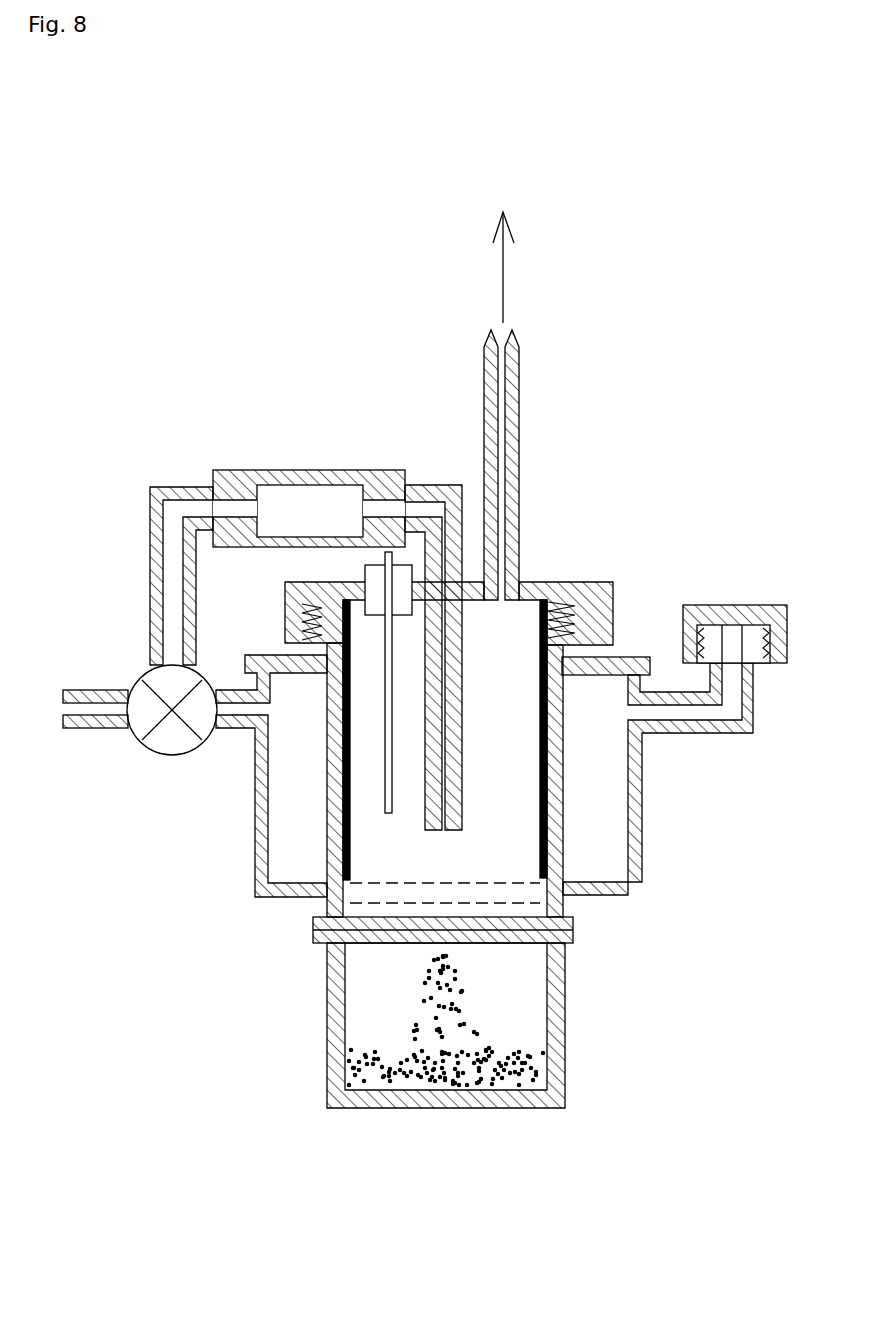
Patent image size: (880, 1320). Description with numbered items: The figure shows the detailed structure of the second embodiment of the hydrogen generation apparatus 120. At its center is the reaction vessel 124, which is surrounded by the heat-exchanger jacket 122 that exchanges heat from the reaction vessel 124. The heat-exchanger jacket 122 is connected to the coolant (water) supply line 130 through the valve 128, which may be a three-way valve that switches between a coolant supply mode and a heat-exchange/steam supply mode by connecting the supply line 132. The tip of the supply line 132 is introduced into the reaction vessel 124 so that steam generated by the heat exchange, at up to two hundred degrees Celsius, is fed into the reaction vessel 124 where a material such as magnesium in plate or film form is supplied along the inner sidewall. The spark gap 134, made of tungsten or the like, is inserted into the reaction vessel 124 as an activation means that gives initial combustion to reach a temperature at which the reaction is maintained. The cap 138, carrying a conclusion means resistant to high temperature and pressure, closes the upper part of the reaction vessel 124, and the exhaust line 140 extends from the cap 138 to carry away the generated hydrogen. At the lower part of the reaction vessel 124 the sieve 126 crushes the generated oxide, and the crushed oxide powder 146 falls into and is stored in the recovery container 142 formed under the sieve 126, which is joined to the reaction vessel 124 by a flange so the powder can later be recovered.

The hydrogen generation apparatus 120 is at (770, 286).
The heat-exchanger jacket 122 is at (285, 813).
The reaction vessel 124 is at (337, 907).
The sieve 126 is at (545, 911).
The valve 128 is at (168, 737).
The coolant supply line 130 is at (100, 693).
The supply line 132 is at (153, 510).
The spark gap 134 is at (387, 792).
The cap 138 is at (613, 603).
The exhaust line 140 is at (513, 467).
The recovery container 142 is at (550, 1015).
The oxide powder 146 is at (362, 1053).